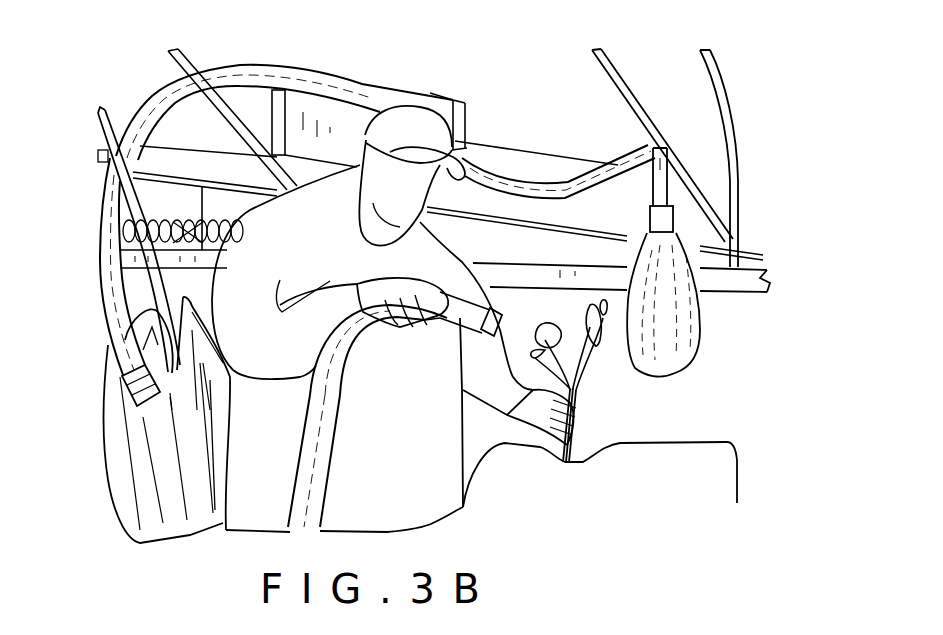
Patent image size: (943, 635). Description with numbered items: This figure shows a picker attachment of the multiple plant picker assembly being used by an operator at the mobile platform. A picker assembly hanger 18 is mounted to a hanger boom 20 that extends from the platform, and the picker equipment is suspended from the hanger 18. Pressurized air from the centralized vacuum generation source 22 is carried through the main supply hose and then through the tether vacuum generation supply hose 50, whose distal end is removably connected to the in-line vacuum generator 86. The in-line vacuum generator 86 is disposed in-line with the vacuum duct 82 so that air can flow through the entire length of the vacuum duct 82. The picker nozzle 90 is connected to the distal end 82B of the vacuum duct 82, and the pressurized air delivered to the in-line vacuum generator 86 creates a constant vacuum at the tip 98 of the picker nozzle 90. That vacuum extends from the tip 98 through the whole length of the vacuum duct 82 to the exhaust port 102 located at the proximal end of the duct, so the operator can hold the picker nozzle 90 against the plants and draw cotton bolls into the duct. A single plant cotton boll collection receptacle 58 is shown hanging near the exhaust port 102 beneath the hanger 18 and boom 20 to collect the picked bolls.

The centralized vacuum generation source 22 is at (413, 97).
The vacuum duct 82 is at (540, 172).
The distal end of the vacuum duct 82B is at (338, 351).
The tether vacuum generation supply hose 50 is at (137, 203).
The in-line vacuum generator 86 is at (122, 378).
The tip 98 is at (503, 332).
The picker nozzle 90 is at (467, 315).
The picker assembly hanger 18 is at (733, 219).
The hanger boom 20 is at (720, 283).
The exhaust port 102 is at (677, 200).
The single plant cotton boll collection receptacle 58 is at (668, 355).